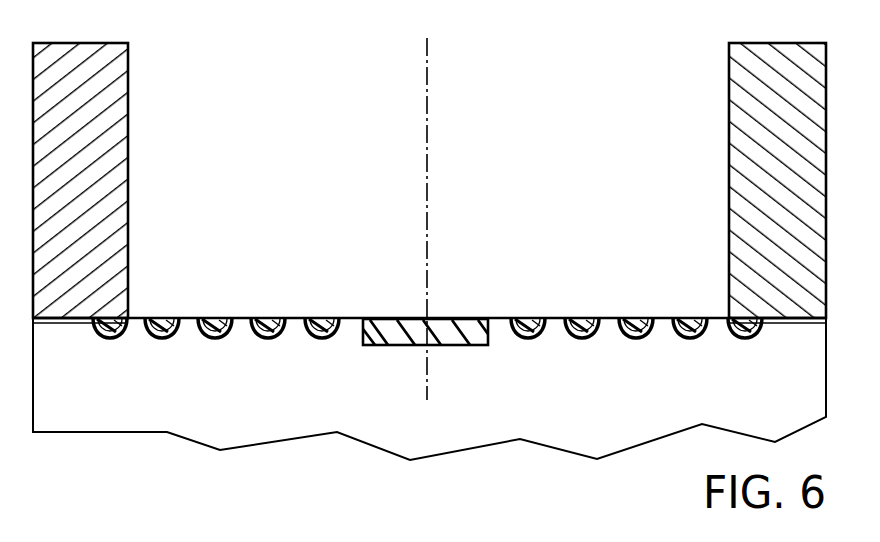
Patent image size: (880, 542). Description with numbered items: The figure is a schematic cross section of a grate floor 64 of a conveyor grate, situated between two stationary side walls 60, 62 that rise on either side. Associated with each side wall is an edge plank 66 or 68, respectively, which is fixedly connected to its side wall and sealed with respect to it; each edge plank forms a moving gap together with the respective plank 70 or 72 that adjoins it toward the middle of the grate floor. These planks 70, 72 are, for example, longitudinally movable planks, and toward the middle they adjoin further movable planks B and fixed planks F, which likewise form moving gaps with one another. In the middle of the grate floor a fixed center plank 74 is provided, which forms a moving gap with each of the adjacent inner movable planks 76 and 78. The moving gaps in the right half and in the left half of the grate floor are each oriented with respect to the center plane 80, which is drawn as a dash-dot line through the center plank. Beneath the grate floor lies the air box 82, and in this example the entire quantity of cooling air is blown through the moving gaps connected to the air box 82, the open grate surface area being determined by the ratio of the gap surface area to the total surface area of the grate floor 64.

The side wall 60 is at (88, 108).
The side wall 62 is at (747, 170).
The grate floor 64 is at (443, 304).
The edge plank 66 is at (128, 326).
The edge plank 68 is at (749, 334).
The plank 70 is at (177, 333).
The plank 72 is at (681, 334).
The fixed center plank 74 is at (406, 336).
The inner movable plank 76 is at (342, 336).
The inner movable plank 78 is at (517, 336).
The center plane 80 is at (430, 105).
The air box 82 is at (269, 419).